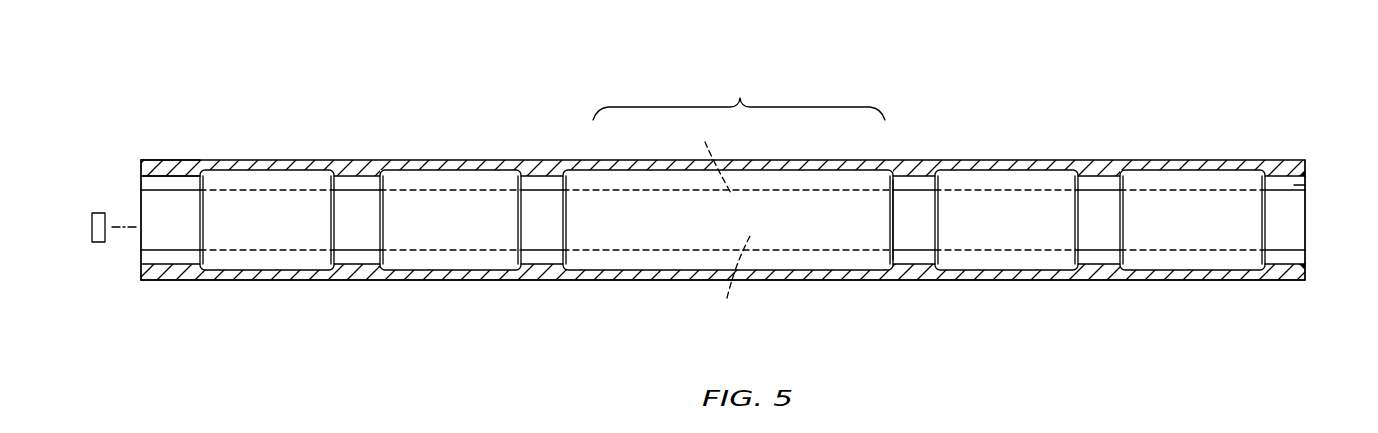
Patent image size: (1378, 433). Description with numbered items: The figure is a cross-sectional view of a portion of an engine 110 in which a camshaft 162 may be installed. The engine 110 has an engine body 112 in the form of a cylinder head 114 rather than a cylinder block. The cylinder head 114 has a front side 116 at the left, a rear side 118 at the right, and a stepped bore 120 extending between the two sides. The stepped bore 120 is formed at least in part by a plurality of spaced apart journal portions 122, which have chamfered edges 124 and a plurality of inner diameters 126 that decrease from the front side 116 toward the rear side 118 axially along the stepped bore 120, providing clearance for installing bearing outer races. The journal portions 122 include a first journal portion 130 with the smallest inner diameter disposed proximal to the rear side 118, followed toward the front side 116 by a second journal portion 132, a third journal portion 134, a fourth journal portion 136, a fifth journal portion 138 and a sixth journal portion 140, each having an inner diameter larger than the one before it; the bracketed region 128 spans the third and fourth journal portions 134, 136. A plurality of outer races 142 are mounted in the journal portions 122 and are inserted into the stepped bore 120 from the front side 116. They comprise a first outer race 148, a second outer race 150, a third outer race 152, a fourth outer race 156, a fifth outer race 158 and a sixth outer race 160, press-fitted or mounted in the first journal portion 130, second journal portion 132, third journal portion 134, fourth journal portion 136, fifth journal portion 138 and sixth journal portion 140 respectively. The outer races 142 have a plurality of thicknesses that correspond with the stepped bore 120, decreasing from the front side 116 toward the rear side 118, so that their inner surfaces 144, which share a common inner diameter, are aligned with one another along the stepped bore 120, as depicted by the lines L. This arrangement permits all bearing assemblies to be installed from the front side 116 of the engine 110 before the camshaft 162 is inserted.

The engine 110 is at (136, 146).
The engine body 112 is at (141, 160).
The cylinder head 114 is at (141, 178).
The front side 116 is at (141, 170).
The rear side 118 is at (1307, 164).
The stepped bore 120 is at (130, 212).
The journal portions 122 is at (170, 179).
The chamfered edges 124 is at (140, 272).
The inner diameters 126 is at (185, 264).
The central cavity section 128 is at (739, 95).
The first journal portion 130 is at (1264, 180).
The second journal portion 132 is at (1082, 180).
The third journal portion 134 is at (890, 180).
The fourth journal portion 136 is at (566, 180).
The fifth journal portion 138 is at (389, 184).
The sixth journal portion 140 is at (208, 184).
The outer races 142 is at (200, 266).
The inner surfaces 144 is at (178, 250).
The first outer race 148 is at (1308, 186).
The second outer race 150 is at (1072, 252).
The third outer race 152 is at (912, 192).
The fourth outer race 156 is at (566, 215).
The fifth outer race 158 is at (370, 185).
The sixth outer race 160 is at (196, 184).
The camshaft 162 is at (100, 243).
The lines L is at (723, 219).